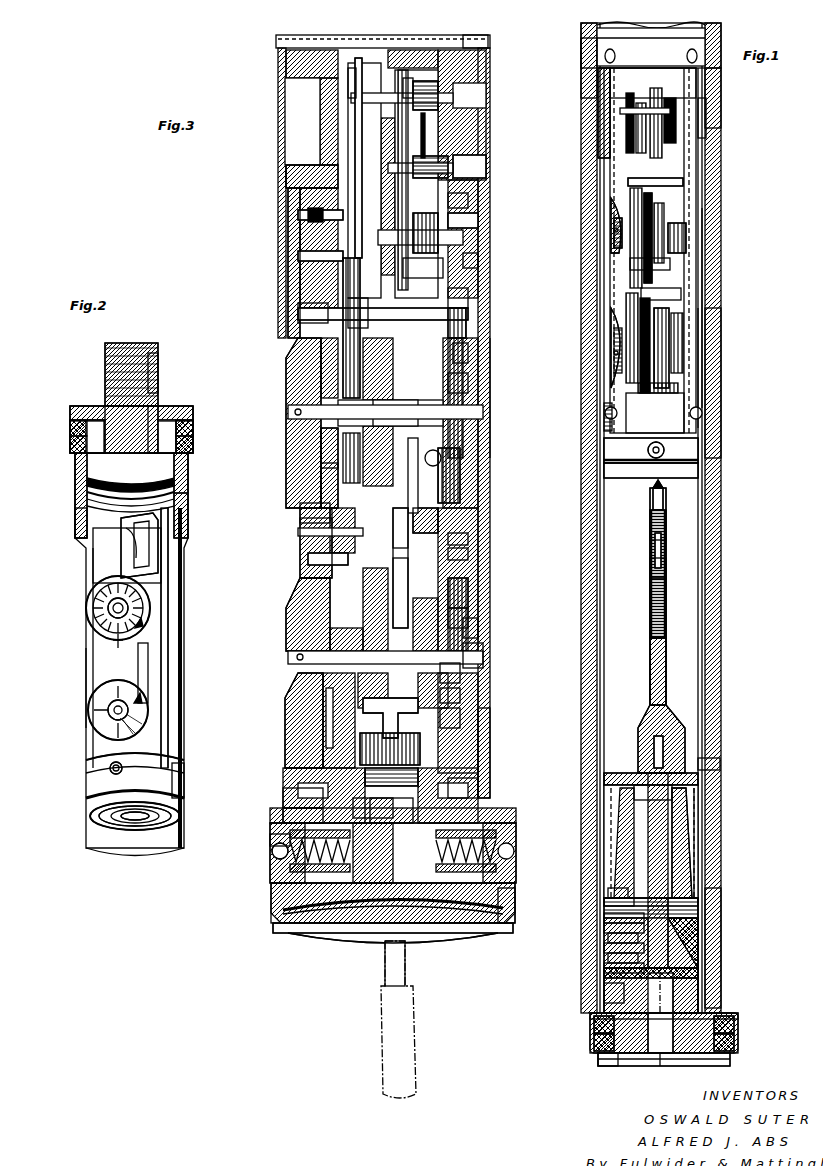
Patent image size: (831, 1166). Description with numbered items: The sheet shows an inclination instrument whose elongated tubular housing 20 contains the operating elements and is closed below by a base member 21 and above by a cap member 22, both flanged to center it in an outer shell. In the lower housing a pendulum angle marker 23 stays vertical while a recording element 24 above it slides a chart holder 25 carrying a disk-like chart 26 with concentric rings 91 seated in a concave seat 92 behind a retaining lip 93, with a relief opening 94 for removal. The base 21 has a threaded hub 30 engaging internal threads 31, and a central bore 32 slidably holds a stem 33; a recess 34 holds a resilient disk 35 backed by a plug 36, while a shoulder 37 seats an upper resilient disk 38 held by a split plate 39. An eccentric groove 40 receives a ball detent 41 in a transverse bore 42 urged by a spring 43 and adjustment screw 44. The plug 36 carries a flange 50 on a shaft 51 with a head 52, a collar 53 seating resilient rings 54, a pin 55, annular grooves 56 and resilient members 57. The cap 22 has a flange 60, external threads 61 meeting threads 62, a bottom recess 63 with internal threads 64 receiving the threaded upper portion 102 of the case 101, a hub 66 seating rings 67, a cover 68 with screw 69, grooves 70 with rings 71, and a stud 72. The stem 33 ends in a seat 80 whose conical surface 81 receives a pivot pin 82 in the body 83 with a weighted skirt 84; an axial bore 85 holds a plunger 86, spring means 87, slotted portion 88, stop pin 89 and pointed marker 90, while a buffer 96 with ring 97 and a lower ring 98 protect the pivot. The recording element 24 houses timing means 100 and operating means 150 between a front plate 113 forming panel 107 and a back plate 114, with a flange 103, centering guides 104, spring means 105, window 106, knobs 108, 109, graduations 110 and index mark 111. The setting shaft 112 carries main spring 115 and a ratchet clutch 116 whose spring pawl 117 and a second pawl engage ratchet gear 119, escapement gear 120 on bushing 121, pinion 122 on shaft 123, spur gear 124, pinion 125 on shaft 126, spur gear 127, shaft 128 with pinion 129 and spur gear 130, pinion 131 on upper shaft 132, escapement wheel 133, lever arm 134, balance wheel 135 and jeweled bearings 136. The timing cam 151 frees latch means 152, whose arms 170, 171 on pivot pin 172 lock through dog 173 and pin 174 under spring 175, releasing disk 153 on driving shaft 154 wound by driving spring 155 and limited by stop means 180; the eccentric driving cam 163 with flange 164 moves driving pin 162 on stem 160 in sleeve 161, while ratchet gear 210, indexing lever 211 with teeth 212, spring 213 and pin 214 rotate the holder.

In FIG. 1, the tubular housing 20 is at (712, 392).
In FIG. 1, the base member 21 is at (714, 967).
In FIG. 2, the cap member 22 is at (68, 458).
In FIG. 1, the cap member 22 is at (712, 66).
In FIG. 3, the angle marker 23 is at (373, 1067).
In FIG. 1, the angle marker 23 is at (670, 701).
In FIG. 3, the recording element 24 is at (484, 385).
In FIG. 2, the recording element 24 is at (73, 673).
In FIG. 1, the recording element 24 is at (700, 300).
In FIG. 3, the chart holder 25 is at (270, 893).
In FIG. 2, the chart holder 25 is at (84, 794).
In FIG. 1, the chart holder 25 is at (693, 460).
In FIG. 3, the chart 26 is at (330, 903).
In FIG. 2, the chart 26 is at (97, 820).
In FIG. 1, the threaded hub 30 is at (715, 942).
In FIG. 1, the internal threads 31 is at (704, 927).
In FIG. 1, the central bore 32 is at (697, 900).
In FIG. 1, the stem 33 is at (689, 878).
In FIG. 1, the recess 34 is at (610, 968).
In FIG. 1, the resilient disk 35 is at (592, 986).
In FIG. 1, the plug 36 is at (698, 983).
In FIG. 1, the shoulder 37 is at (598, 910).
In FIG. 1, the upper resilient disk 38 is at (591, 896).
In FIG. 1, the split plate 39 is at (608, 883).
In FIG. 1, the eccentric groove 40 is at (598, 920).
In FIG. 1, the spring detent means 41 is at (598, 943).
In FIG. 1, the transverse bore 42 is at (600, 932).
In FIG. 1, the spring 43 is at (600, 953).
In FIG. 1, the adjustment screw 44 is at (600, 955).
In FIG. 1, the flange 50 is at (585, 1025).
In FIG. 1, the shaft 51 is at (656, 1036).
In FIG. 1, the head 52 is at (600, 1056).
In FIG. 1, the collar 53 is at (678, 1044).
In FIG. 1, the resilient rings 54 is at (616, 1054).
In FIG. 1, the pin 55 is at (588, 1008).
In FIG. 1, the annular grooves 56 is at (728, 1014).
In FIG. 1, the resilient members 57 is at (730, 1001).
In FIG. 2, the flange 60 is at (62, 436).
In FIG. 2, the external threads 61 is at (69, 512).
In FIG. 1, the external threads 61 is at (712, 92).
In FIG. 1, the threads 62 is at (700, 116).
In FIG. 2, the bottom recess 63 is at (69, 486).
In FIG. 1, the bottom recess 63 is at (578, 68).
In FIG. 2, the internal threads 64 is at (178, 474).
In FIG. 1, the internal threads 64 is at (587, 96).
In FIG. 2, the hub 66 is at (154, 408).
In FIG. 2, the resilient rings 67 is at (174, 396).
In FIG. 2, the cover 68 is at (80, 406).
In FIG. 2, the screw 69 is at (138, 393).
In FIG. 2, the annular grooves 70 is at (63, 426).
In FIG. 2, the resilient rings 71 is at (62, 410).
In FIG. 2, the stud 72 is at (150, 361).
In FIG. 1, the seat 80 is at (675, 775).
In FIG. 1, the conical interior surface 81 is at (678, 746).
In FIG. 1, the pivot pin 82 is at (679, 730).
In FIG. 1, the element body 83 is at (659, 648).
In FIG. 1, the weighted skirt 84 is at (685, 838).
In FIG. 1, the axial bore 85 is at (657, 527).
In FIG. 1, the plunger 86 is at (657, 508).
In FIG. 1, the spring means 87 is at (659, 586).
In FIG. 1, the slotted portion 88 is at (659, 540).
In FIG. 1, the stop pin 89 is at (659, 552).
In FIG. 1, the marker 90 is at (658, 480).
In FIG. 2, the concentric rings 91 is at (134, 815).
In FIG. 3, the concave seat 92 is at (365, 900).
In FIG. 3, the retaining lip 93 is at (290, 918).
In FIG. 2, the retaining lip 93 is at (152, 822).
In FIG. 3, the relief opening 94 is at (488, 893).
In FIG. 2, the relief opening 94 is at (178, 782).
In FIG. 1, the annular buffer 96 is at (713, 754).
In FIG. 1, the resilient ring 97 is at (693, 766).
In FIG. 1, the resilient ring 98 is at (689, 856).
In FIG. 3, the timing means 100 is at (349, 285).
In FIG. 1, the timing means 100 is at (655, 190).
In FIG. 3, the case 101 is at (480, 738).
In FIG. 2, the case 101 is at (162, 678).
In FIG. 1, the case 101 is at (697, 358).
In FIG. 3, the threaded upper portion 102 is at (271, 49).
In FIG. 2, the threaded upper portion 102 is at (180, 498).
In FIG. 1, the threaded upper portion 102 is at (602, 74).
In FIG. 3, the flange 103 is at (450, 778).
In FIG. 2, the flange 103 is at (170, 746).
In FIG. 1, the flange 103 is at (697, 421).
In FIG. 3, the centering guides 104 is at (268, 844).
In FIG. 2, the centering guides 104 is at (102, 760).
In FIG. 1, the centering guides 104 is at (650, 439).
In FIG. 3, the spring means 105 is at (264, 830).
In FIG. 3, the transparent window 106 is at (290, 207).
In FIG. 2, the transparent window 106 is at (142, 546).
In FIG. 3, the panel 107 is at (292, 524).
In FIG. 2, the panel 107 is at (132, 658).
In FIG. 3, the winding and setting knob 108 is at (290, 346).
In FIG. 2, the winding and setting knob 108 is at (152, 578).
In FIG. 1, the winding and setting knob 108 is at (603, 238).
In FIG. 3, the knob 109 is at (298, 586).
In FIG. 2, the knob 109 is at (140, 710).
In FIG. 1, the knob 109 is at (600, 334).
In FIG. 2, the radial graduations 110 is at (142, 596).
In FIG. 1, the radial graduations 110 is at (605, 218).
In FIG. 2, the index mark 111 is at (112, 638).
In FIG. 3, the main setting shaft 112 is at (283, 404).
In FIG. 2, the main setting shaft 112 is at (100, 600).
In FIG. 1, the main setting shaft 112 is at (665, 213).
In FIG. 3, the front frame plate 113 is at (290, 250).
In FIG. 1, the front frame plate 113 is at (655, 260).
In FIG. 3, the back plate 114 is at (425, 260).
In FIG. 1, the back plate 114 is at (680, 230).
In FIG. 3, the main spring 115 is at (450, 373).
In FIG. 3, the ratchet clutch 116 is at (450, 323).
In FIG. 3, the spring pawl 117 is at (445, 288).
In FIG. 3, the ratchet-toothed gear 119 is at (300, 428).
In FIG. 3, the escapement gear 120 is at (312, 463).
In FIG. 3, the bushing 121 is at (300, 388).
In FIG. 3, the pinion 122 is at (320, 318).
In FIG. 3, the transverse shaft 123 is at (345, 303).
In FIG. 3, the spur gear 124 is at (462, 253).
In FIG. 3, the pinion 125 is at (435, 233).
In FIG. 3, the second shaft 126 is at (440, 213).
In FIG. 3, the spur gear 127 is at (440, 193).
In FIG. 3, the third shaft 128 is at (445, 165).
In FIG. 3, the pinion 129 is at (425, 137).
In FIG. 3, the spur gear 130 is at (420, 125).
In FIG. 3, the pinion 131 is at (395, 85).
In FIG. 3, the upper shaft 132 is at (480, 32).
In FIG. 3, the escapement wheel 133 is at (345, 83).
In FIG. 3, the lever arm 134 is at (345, 125).
In FIG. 3, the balance wheel 135 is at (300, 160).
In FIG. 3, the jeweled bearings 136 is at (283, 184).
In FIG. 3, the operating means 150 is at (420, 563).
In FIG. 1, the operating means 150 is at (665, 340).
In FIG. 3, the timing cam 151 is at (455, 343).
In FIG. 3, the latch means 152 is at (420, 493).
In FIG. 1, the latch means 152 is at (660, 280).
In FIG. 3, the release disk 153 is at (455, 598).
In FIG. 3, the main driving shaft 154 is at (287, 646).
In FIG. 2, the main driving shaft 154 is at (100, 704).
In FIG. 3, the driving spring 155 is at (470, 616).
In FIG. 3, the stem 160 is at (280, 788).
In FIG. 3, the sleeve 161 is at (285, 804).
In FIG. 3, the driving pin 162 is at (355, 702).
In FIG. 3, the driving cam 163 is at (335, 678).
In FIG. 3, the peripheral flange 164 is at (352, 730).
In FIG. 3, the upper latch arm 170 is at (440, 468).
In FIG. 3, the lower latch arm 171 is at (455, 578).
In FIG. 3, the pivot pin 172 is at (440, 508).
In FIG. 3, the dog 173 is at (450, 543).
In FIG. 3, the pin 174 is at (450, 528).
In FIG. 3, the spring 175 is at (293, 498).
In FIG. 3, the stop means 180 is at (302, 545).
In FIG. 3, the ratchet toothed gear 210 is at (390, 728).
In FIG. 3, the indexing lever 211 is at (452, 660).
In FIG. 3, the teeth 212 is at (440, 710).
In FIG. 3, the spring 213 is at (438, 685).
In FIG. 3, the pin 214 is at (468, 638).